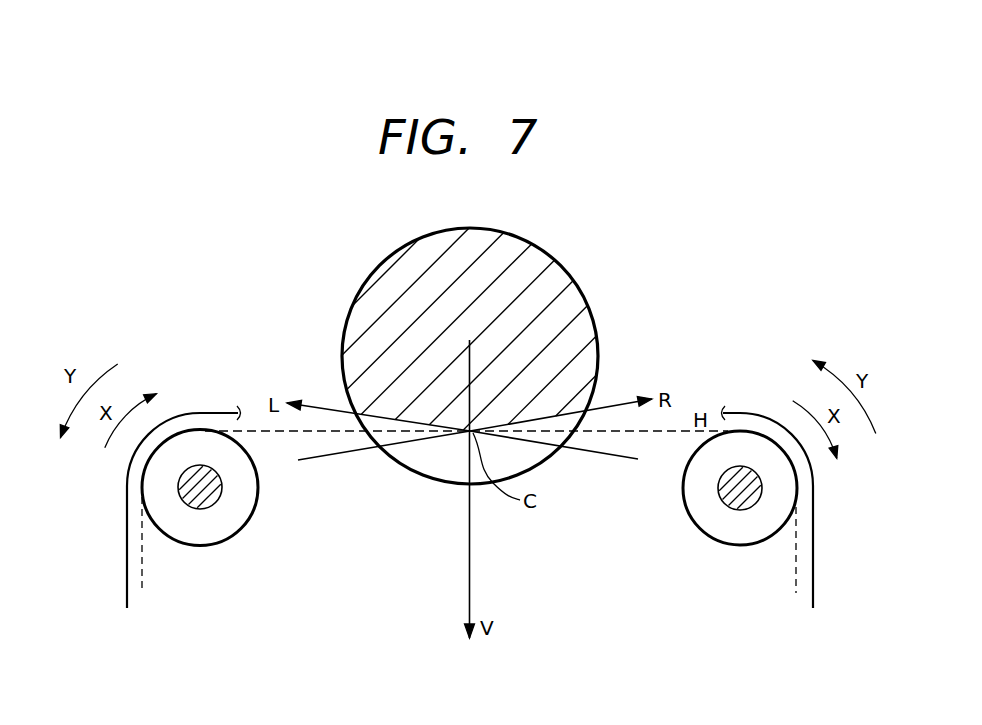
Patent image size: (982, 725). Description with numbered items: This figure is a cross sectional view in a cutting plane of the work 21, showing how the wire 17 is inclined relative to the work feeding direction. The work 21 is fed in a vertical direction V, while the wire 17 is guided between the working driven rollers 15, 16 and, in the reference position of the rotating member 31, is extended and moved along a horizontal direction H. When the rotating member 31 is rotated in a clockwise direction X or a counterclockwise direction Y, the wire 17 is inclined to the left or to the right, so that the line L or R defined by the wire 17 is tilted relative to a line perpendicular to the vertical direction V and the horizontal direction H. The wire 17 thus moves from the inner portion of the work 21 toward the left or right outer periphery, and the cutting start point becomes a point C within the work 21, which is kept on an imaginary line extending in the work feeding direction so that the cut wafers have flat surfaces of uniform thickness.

The working driven roller 15 is at (228, 517).
The working driven roller 16 is at (710, 522).
The wire 17 is at (612, 403).
The work 21 is at (582, 288).
The rotating member 31 is at (129, 470).